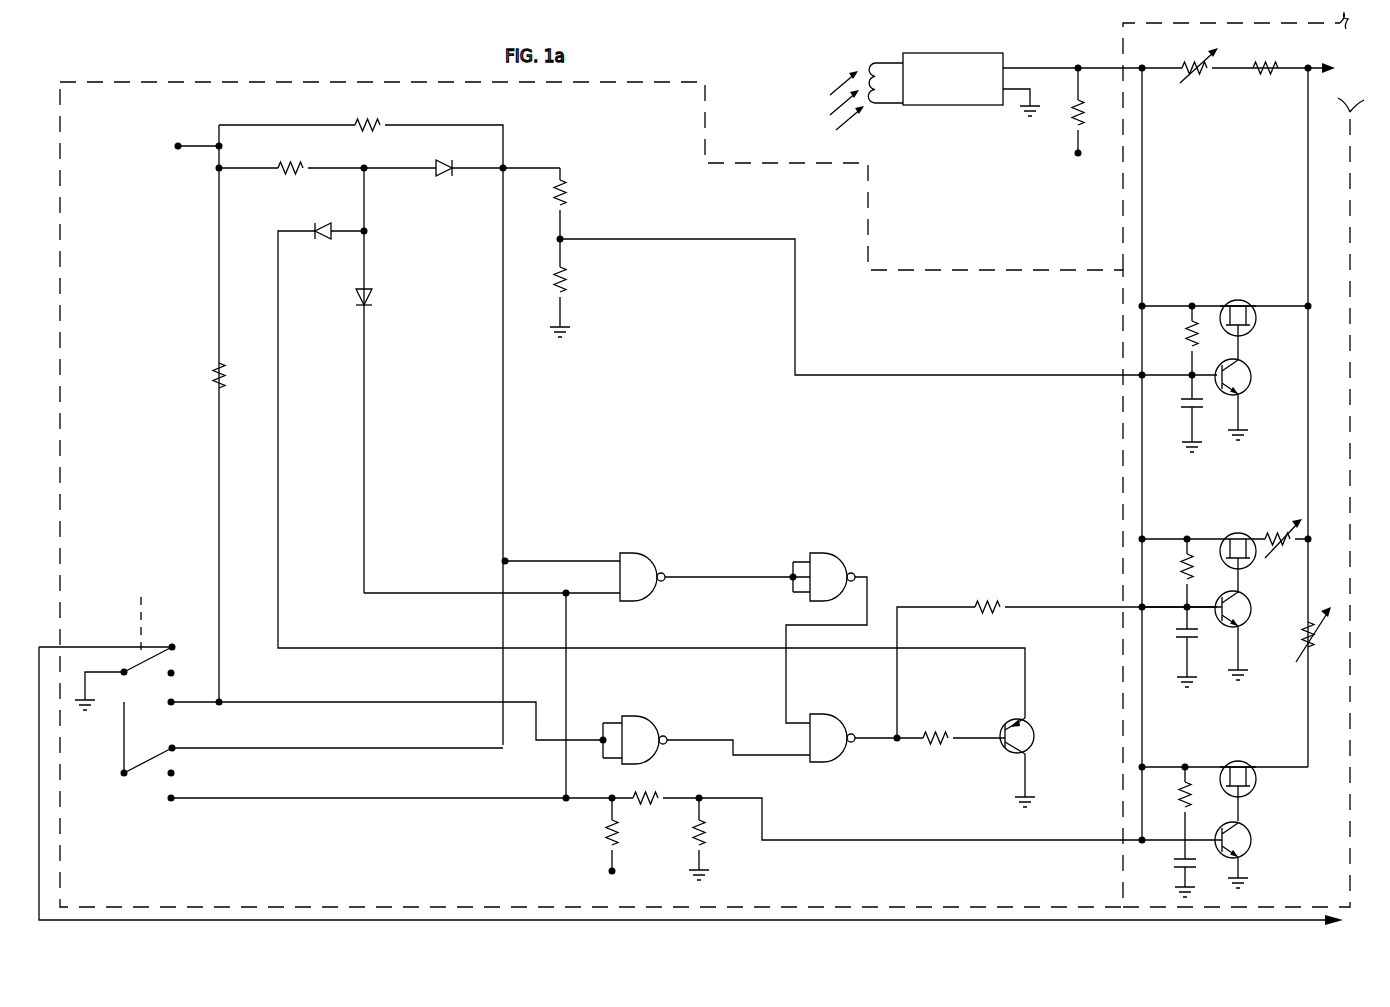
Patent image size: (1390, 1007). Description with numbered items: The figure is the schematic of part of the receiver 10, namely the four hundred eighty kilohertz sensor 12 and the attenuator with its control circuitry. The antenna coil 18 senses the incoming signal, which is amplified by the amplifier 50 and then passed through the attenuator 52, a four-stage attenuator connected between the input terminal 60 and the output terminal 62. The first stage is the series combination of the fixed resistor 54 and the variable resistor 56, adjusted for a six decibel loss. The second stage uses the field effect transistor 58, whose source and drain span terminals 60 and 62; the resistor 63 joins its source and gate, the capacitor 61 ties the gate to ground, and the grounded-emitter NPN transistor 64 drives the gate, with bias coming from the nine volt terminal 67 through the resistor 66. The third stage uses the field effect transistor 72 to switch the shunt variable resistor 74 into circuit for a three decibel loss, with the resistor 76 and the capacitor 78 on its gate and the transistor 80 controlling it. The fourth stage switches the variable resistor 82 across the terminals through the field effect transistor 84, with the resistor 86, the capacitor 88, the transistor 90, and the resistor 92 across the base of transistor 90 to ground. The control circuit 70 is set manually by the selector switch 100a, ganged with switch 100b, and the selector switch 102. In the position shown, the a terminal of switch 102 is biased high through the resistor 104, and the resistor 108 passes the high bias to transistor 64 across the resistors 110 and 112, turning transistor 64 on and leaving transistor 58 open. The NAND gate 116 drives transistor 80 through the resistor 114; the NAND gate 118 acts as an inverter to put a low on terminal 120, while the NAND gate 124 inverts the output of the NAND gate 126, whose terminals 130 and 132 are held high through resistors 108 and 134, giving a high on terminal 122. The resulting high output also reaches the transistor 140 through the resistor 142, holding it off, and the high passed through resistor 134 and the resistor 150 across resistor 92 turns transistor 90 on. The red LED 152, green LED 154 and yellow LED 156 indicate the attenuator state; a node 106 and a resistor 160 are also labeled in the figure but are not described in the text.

The receiver 10 is at (734, 111).
The 480 KHz sensor 12 is at (1001, 161).
The antenna coil 18 is at (875, 103).
The 480 KHz amplifier 50 is at (1000, 53).
The attenuator 52 is at (1224, 259).
The fixed resistor 54 is at (1269, 78).
The variable resistor 56 is at (1198, 78).
The field effect transistor 58 is at (1259, 323).
The attenuator input terminal 60 is at (1144, 66).
The capacitor 61 is at (1184, 399).
The attenuator output terminal 62 is at (1308, 66).
The resistor 63 is at (1186, 340).
The NPN transistor 64 is at (1251, 385).
The resistor 66 is at (1082, 114).
The +9 volt terminal 67 is at (1092, 147).
The attenuator control circuit 70 is at (394, 249).
The field effect transistor 72 is at (1257, 562).
The variable resistor 74 is at (1280, 535).
The resistor 76 is at (1182, 575).
The capacitor 78 is at (1180, 636).
The transistor 80 is at (1251, 612).
The variable resistor 82 is at (1312, 648).
The field effect transistor 84 is at (1257, 784).
The resistor 86 is at (1182, 800).
The capacitor 88 is at (1172, 862).
The transistor 90 is at (1252, 841).
The resistor 92 is at (703, 837).
The selector switch 100a is at (152, 640).
The selector switch 100b is at (131, 617).
The selector switch 102 is at (157, 743).
The resistor 104 is at (210, 378).
The node 106 is at (224, 146).
The resistor 108 is at (380, 124).
The resistor 110 is at (568, 194).
The resistor 112 is at (571, 282).
The resistor 114 is at (1000, 612).
The NAND gate 116 is at (841, 725).
The NAND gate 118 is at (643, 724).
The input terminal 120 is at (812, 760).
The input terminal 122 is at (791, 706).
The NAND gate 124 is at (838, 556).
The NAND gate 126 is at (650, 556).
The input terminal 130 is at (586, 557).
The input terminal 132 is at (640, 599).
The resistor 134 is at (606, 836).
The transistor 140 is at (1036, 735).
The resistor 142 is at (942, 744).
The resistor 150 is at (654, 796).
The red LED 152 is at (466, 186).
The green LED 154 is at (344, 288).
The yellow LED 156 is at (298, 217).
The resistor 160 is at (300, 168).